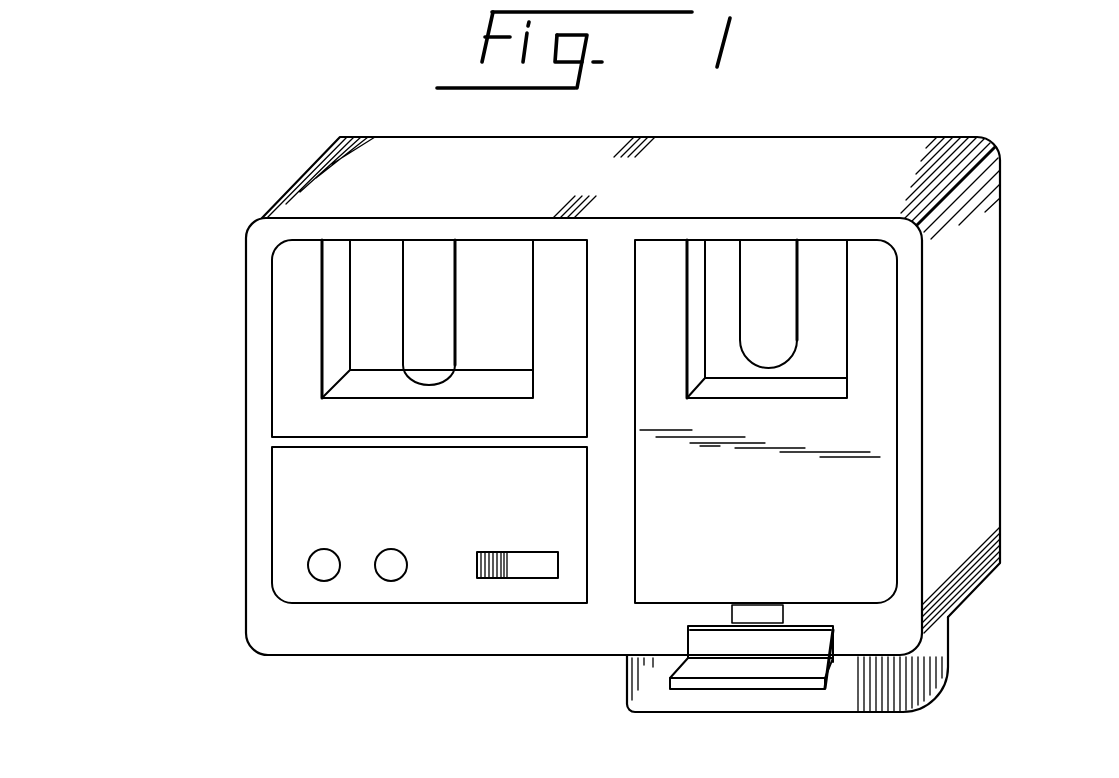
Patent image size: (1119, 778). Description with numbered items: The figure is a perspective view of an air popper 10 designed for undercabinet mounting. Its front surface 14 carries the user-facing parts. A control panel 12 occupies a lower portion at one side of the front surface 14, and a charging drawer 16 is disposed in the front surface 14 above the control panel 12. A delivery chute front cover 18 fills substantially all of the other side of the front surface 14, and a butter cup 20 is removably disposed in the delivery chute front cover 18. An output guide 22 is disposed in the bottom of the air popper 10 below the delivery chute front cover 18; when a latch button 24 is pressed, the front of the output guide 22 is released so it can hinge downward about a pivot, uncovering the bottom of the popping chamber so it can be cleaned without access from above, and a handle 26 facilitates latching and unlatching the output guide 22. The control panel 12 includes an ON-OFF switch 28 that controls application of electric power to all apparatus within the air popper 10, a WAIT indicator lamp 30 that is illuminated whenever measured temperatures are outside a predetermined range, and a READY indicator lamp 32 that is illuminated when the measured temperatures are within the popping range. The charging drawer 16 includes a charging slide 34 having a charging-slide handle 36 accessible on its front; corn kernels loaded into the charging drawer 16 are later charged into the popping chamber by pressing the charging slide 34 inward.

The air popper 10 is at (1055, 115).
The control panel 12 is at (440, 582).
The front surface 14 is at (608, 258).
The charging drawer 16 is at (292, 263).
The delivery chute front cover 18 is at (880, 435).
The butter cup 20 is at (775, 263).
The output guide 22 is at (942, 667).
The latch button 24 is at (752, 605).
The handle 26 is at (803, 668).
The ON-OFF switch 28 is at (495, 578).
The WAIT indicator lamp 30 is at (318, 578).
The READY indicator lamp 32 is at (390, 573).
The charging slide 34 is at (483, 293).
The charging-slide handle 36 is at (422, 272).